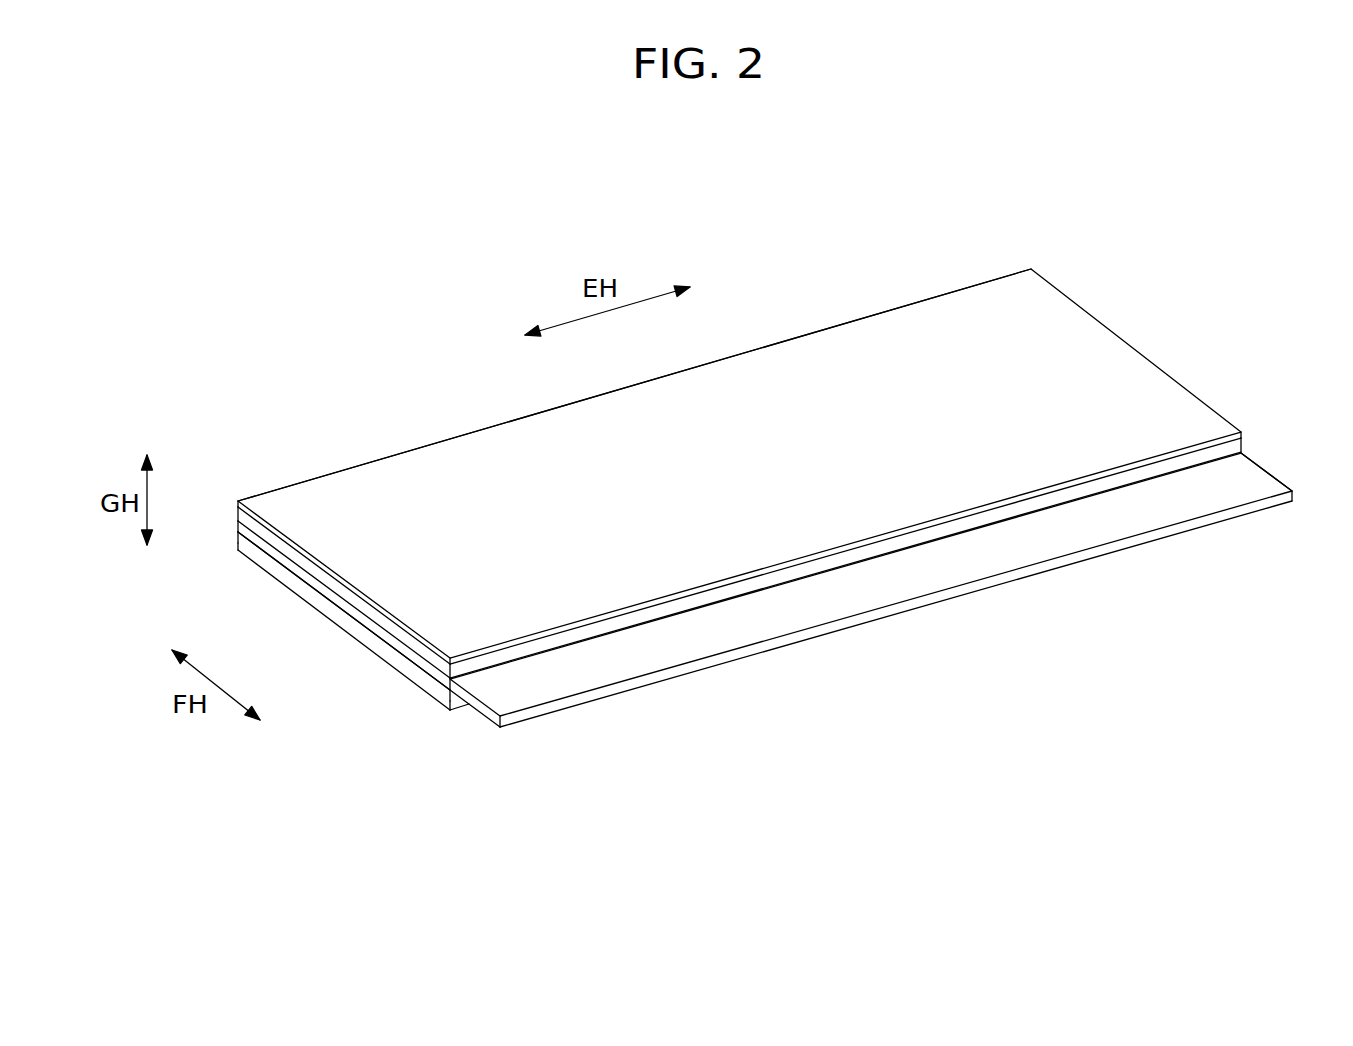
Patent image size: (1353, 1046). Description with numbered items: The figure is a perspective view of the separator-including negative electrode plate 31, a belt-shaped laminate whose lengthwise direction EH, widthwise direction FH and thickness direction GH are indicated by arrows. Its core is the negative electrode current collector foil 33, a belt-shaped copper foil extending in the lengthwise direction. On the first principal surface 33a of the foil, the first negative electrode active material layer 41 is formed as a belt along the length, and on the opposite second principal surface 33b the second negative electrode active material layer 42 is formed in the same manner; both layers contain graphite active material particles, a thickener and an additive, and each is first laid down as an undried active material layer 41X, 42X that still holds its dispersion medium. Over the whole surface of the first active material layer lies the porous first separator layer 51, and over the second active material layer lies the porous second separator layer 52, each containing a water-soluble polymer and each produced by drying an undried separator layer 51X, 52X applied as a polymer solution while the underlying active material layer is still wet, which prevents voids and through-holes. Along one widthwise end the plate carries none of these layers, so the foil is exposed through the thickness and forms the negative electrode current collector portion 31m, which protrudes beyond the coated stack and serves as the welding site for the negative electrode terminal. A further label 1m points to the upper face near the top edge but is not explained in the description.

The separator-including negative electrode plate 31 is at (434, 312).
The main surface of laminate 1m is at (792, 325).
The first separator layer 51 is at (739, 412).
The undried separator layer 51X is at (892, 328).
The first negative electrode active material layer 41 is at (770, 589).
The undried active material layer 41X is at (955, 527).
The negative electrode current collector foil 33 is at (867, 595).
The first principal surface 33a is at (640, 655).
The second principal surface 33b is at (576, 713).
The negative electrode current collector portion 31m is at (1102, 525).
The second negative electrode active material layer 42 is at (293, 706).
The undried active material layer 42X is at (345, 622).
The second separator layer 52 is at (410, 686).
The undried separator layer 52X is at (427, 700).